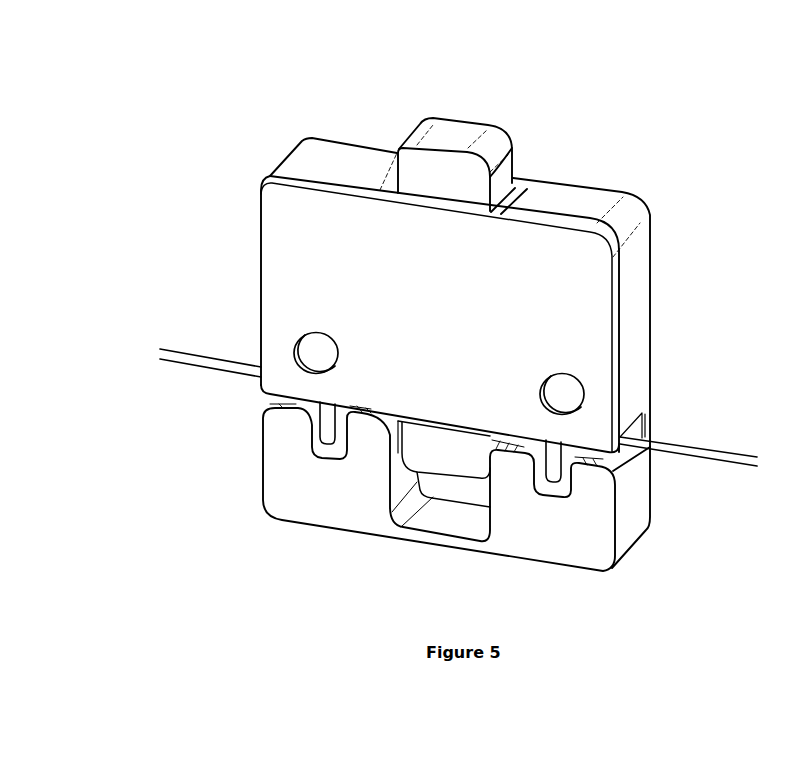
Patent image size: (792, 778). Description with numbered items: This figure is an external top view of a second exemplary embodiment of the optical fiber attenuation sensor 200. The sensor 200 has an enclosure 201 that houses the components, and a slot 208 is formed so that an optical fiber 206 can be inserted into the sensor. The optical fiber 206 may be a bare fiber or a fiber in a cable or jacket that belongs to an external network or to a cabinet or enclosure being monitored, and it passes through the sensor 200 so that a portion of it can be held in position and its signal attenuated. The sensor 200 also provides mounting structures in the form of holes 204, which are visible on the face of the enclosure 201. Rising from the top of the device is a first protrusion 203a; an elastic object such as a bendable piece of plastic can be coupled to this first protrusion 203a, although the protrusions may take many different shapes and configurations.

The optical fiber attenuation sensor 200 is at (329, 115).
The enclosure 201 is at (650, 267).
The first protrusion 203a is at (444, 162).
The holes 204 is at (562, 400).
The optical fiber 206 is at (680, 445).
The slot 208 is at (578, 457).